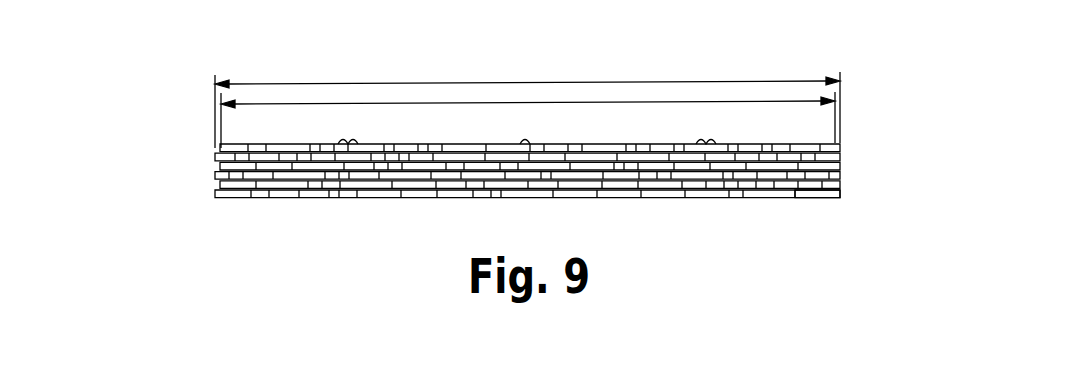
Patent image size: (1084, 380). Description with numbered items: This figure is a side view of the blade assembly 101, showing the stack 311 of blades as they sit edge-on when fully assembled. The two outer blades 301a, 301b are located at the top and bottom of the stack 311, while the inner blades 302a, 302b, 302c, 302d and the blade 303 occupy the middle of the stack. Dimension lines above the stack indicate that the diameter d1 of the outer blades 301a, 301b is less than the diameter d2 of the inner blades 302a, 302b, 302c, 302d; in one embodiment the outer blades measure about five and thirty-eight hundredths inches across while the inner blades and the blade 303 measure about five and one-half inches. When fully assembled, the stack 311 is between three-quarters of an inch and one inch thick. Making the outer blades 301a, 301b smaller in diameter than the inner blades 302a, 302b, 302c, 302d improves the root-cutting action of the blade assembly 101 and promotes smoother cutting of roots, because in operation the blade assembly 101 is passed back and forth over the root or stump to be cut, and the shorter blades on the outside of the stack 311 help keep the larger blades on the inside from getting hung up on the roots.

The blade assembly 101 is at (869, 74).
The stack 311 is at (127, 140).
The blade 301a is at (234, 149).
The blade 301b is at (221, 198).
The blade 302a is at (842, 152).
The blade 302b is at (216, 168).
The blade 302c is at (215, 181).
The blade 302d is at (843, 188).
The blade 303 is at (842, 173).
The diameter d1 is at (425, 106).
The diameter d2 is at (632, 82).